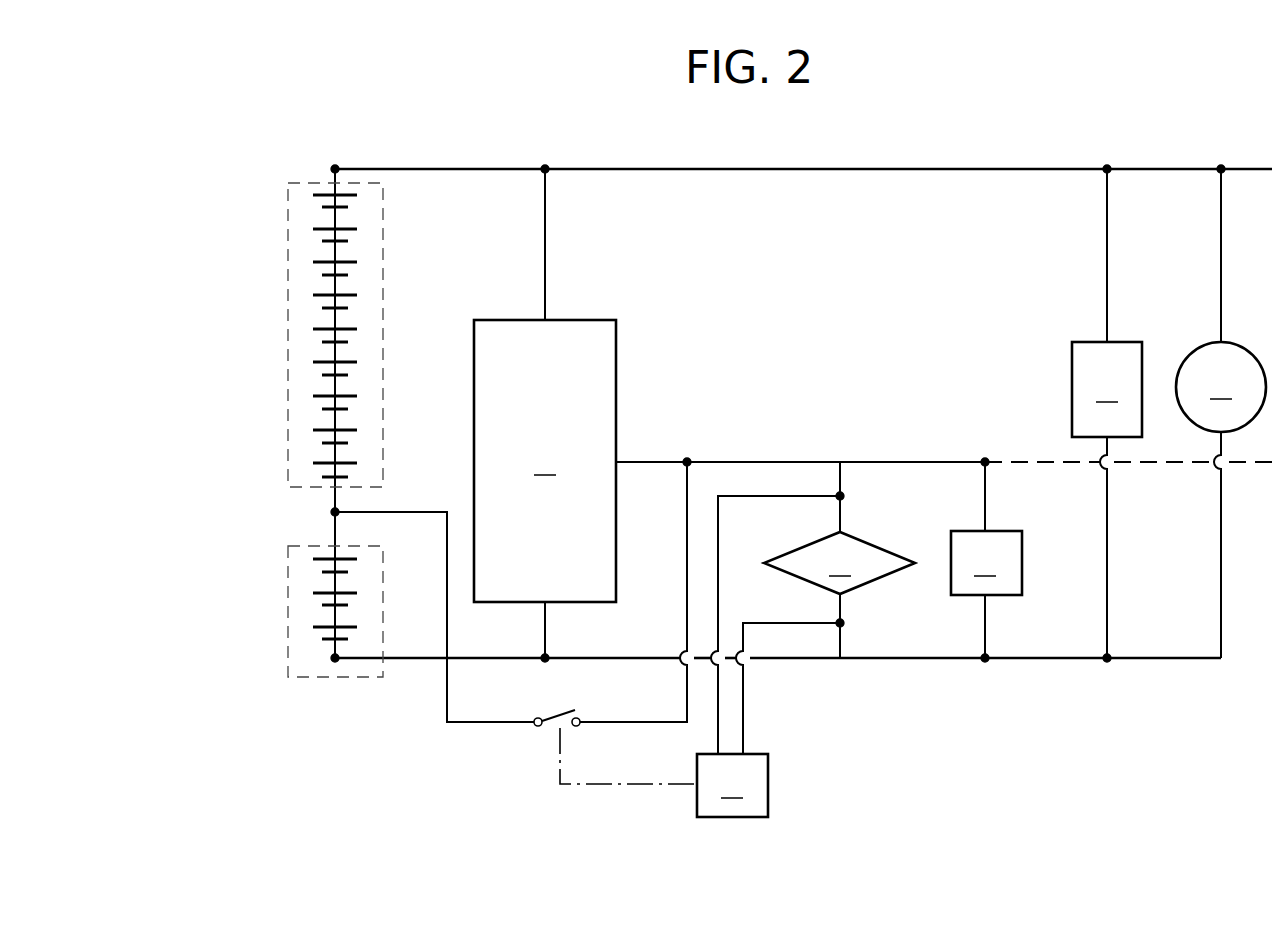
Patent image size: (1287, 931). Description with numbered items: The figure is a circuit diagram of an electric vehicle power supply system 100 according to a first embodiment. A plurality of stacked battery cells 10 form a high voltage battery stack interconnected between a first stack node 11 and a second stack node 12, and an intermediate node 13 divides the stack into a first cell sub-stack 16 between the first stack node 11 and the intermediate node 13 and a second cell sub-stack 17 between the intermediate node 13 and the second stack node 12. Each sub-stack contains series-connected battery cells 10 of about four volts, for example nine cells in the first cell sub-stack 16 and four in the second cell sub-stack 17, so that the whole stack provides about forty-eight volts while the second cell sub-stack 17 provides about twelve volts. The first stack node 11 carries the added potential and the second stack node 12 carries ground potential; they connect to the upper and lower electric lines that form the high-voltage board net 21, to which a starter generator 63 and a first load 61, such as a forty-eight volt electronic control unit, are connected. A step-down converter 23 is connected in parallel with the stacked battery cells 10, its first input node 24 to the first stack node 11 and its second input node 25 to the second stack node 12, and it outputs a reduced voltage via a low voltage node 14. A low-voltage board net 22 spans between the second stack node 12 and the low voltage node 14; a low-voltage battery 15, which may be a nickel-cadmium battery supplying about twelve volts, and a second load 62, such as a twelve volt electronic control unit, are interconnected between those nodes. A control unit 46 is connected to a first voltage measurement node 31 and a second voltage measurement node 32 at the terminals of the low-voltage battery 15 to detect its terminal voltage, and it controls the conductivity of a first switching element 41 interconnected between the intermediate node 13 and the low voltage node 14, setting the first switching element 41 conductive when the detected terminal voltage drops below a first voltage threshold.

The power supply system 100 is at (303, 140).
The battery cells 10 is at (325, 307).
The first stack node 11 is at (336, 165).
The second stack node 12 is at (333, 660).
The intermediate node 13 is at (331, 512).
The low voltage node 14 is at (687, 459).
The low-voltage battery 15 is at (839, 560).
The first cell sub-stack 16 is at (288, 238).
The second cell sub-stack 17 is at (288, 626).
The high-voltage board net 21 is at (909, 167).
The low-voltage board net 22 is at (925, 459).
The step-down converter 23 is at (545, 461).
The first input node 24 is at (545, 165).
The second input node 25 is at (549, 656).
The first voltage measurement node 31 is at (845, 496).
The second voltage measurement node 32 is at (845, 623).
The first switching element 41 is at (545, 718).
The control unit 46 is at (732, 785).
The first load 61 is at (1107, 413).
The second load 62 is at (986, 560).
The starter generator 63 is at (1221, 411).